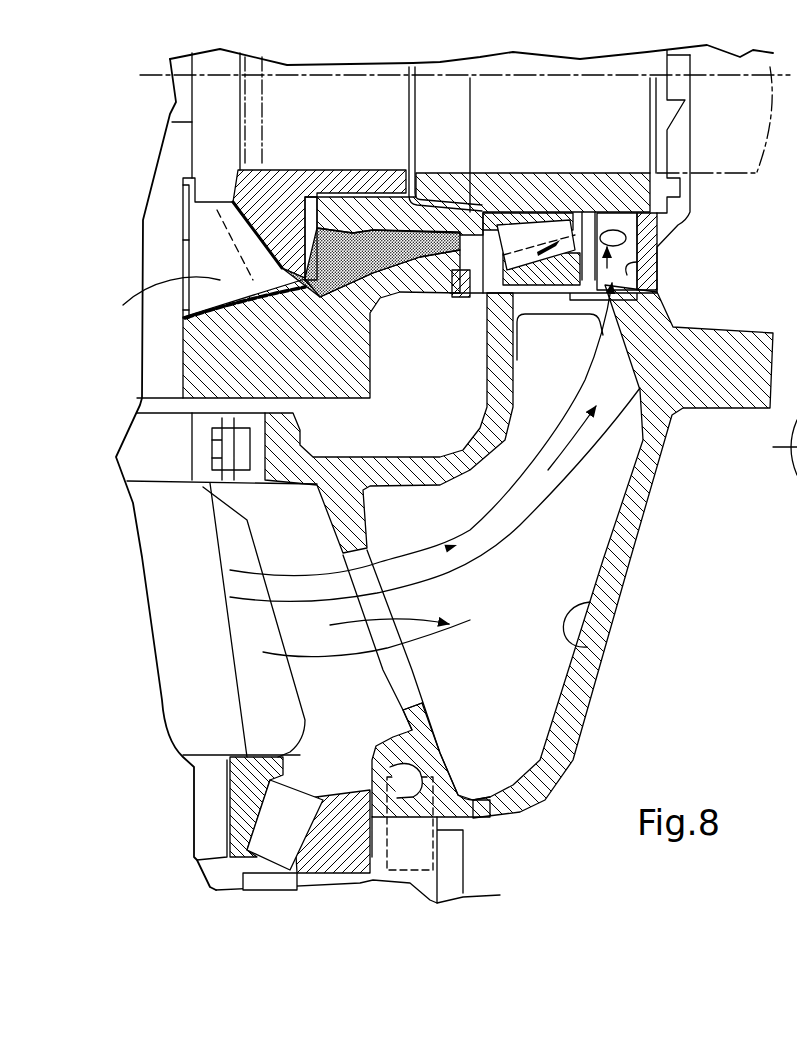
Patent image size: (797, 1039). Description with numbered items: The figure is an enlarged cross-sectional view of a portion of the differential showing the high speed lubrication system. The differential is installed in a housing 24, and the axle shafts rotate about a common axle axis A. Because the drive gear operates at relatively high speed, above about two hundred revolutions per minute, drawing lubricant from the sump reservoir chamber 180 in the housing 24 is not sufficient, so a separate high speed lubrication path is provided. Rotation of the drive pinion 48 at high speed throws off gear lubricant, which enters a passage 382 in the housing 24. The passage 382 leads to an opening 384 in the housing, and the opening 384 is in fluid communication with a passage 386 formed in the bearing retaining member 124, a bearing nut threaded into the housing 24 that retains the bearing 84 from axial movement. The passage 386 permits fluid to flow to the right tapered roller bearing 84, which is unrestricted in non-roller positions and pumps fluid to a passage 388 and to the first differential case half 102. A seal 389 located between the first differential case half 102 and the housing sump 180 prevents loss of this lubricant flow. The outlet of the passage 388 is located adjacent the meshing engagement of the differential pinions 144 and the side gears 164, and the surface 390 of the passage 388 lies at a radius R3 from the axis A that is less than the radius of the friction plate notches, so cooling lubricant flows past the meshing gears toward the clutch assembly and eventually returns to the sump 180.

The housing 24 is at (633, 515).
The drive pinion 48 is at (197, 710).
The bearing 84 is at (522, 212).
The first differential case half 102 is at (180, 365).
The bearing retaining member 124 is at (683, 153).
The differential pinion 144 is at (180, 318).
The side gear 164 is at (273, 203).
The sump reservoir chamber 180 is at (372, 438).
The passage 382 is at (588, 603).
The opening 384 is at (627, 268).
The passage 386 is at (658, 215).
The passage 388 is at (415, 205).
The seal 389 is at (492, 300).
The surface 390 is at (447, 268).
The radius R3 is at (490, 120).
The axle axis A is at (540, 73).